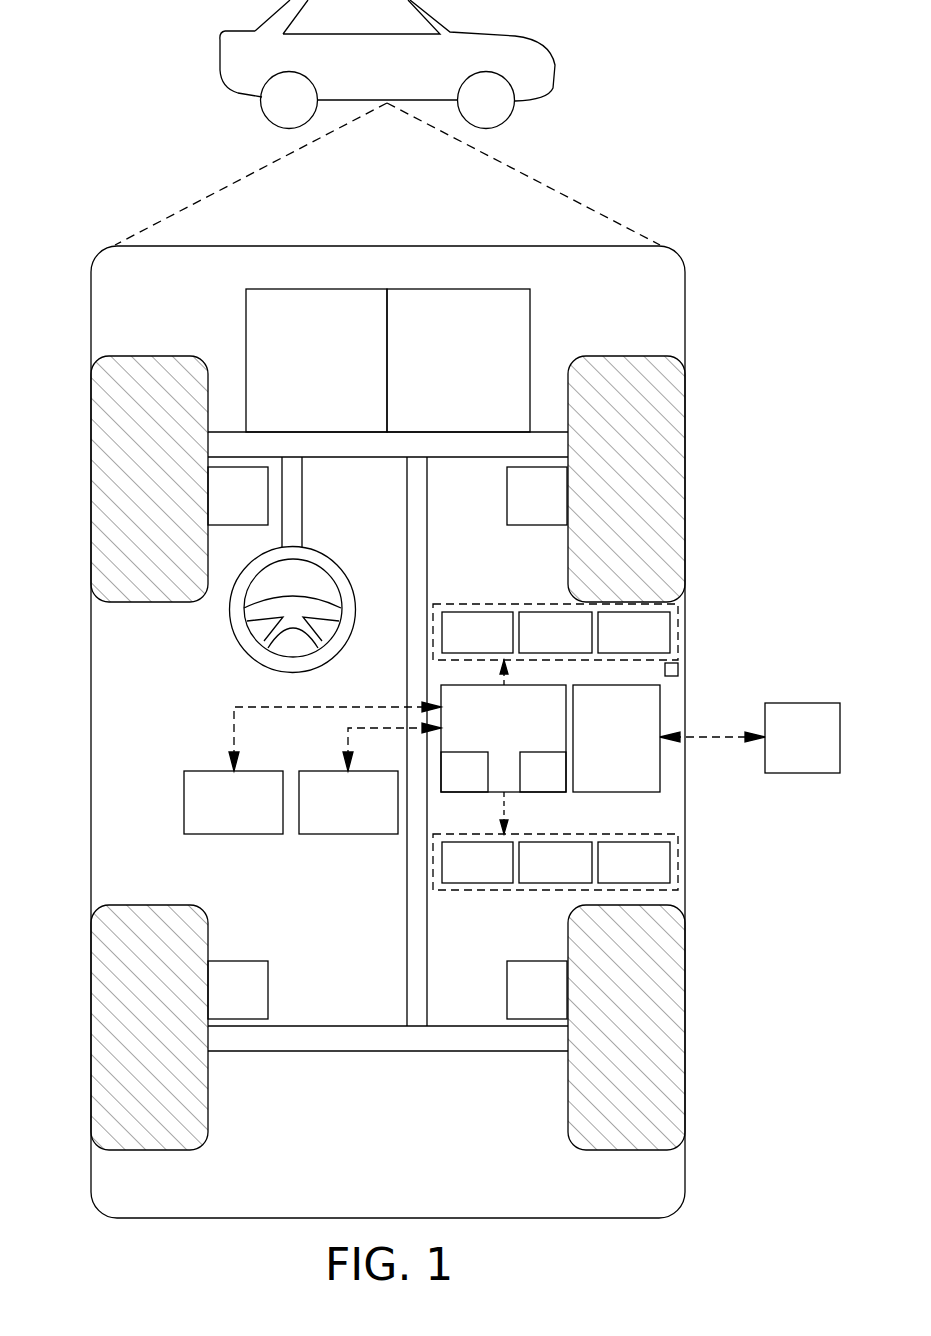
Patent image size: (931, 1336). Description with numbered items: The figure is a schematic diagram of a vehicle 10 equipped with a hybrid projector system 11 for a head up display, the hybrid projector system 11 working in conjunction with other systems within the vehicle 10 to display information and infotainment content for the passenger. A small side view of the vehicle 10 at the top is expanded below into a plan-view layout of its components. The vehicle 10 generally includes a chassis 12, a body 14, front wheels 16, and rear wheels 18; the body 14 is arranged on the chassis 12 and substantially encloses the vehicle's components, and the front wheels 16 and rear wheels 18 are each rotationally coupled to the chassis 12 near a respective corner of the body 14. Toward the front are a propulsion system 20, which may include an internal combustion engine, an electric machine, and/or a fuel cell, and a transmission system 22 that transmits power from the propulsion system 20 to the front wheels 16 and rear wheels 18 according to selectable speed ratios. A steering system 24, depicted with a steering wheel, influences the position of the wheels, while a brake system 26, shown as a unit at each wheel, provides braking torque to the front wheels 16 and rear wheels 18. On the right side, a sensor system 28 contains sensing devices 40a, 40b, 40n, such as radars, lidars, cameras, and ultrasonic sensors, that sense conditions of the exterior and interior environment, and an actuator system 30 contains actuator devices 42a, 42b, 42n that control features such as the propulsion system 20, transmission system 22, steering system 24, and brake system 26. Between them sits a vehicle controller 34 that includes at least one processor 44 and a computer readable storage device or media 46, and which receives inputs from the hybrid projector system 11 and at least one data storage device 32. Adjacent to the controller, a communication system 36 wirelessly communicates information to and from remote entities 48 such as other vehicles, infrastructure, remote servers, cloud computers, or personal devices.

The vehicle 10 is at (374, 79).
The chassis 12 is at (405, 935).
The body 14 is at (91, 733).
The front wheels 16 is at (148, 356).
The rear wheels 18 is at (150, 1150).
The propulsion system 20 is at (303, 371).
The transmission system 22 is at (445, 371).
The steering system 24 is at (322, 494).
The brake system 26 is at (225, 506).
The sensor system 28 is at (555, 610).
The actuator system 30 is at (555, 884).
The hybrid projector system 11 is at (220, 812).
The data storage device 32 is at (335, 812).
The vehicle controller 34 is at (503, 747).
The communication system 36 is at (603, 748).
The sensing device 40a is at (497, 643).
The sensing device 40b is at (575, 643).
The sensing device 40n is at (654, 643).
The actuator device 42a is at (497, 873).
The actuator device 42b is at (575, 873).
The actuator device 42n is at (654, 873).
The processor 44 is at (451, 783).
The computer readable storage device or media 46 is at (530, 783).
The remote entities 48 is at (789, 748).